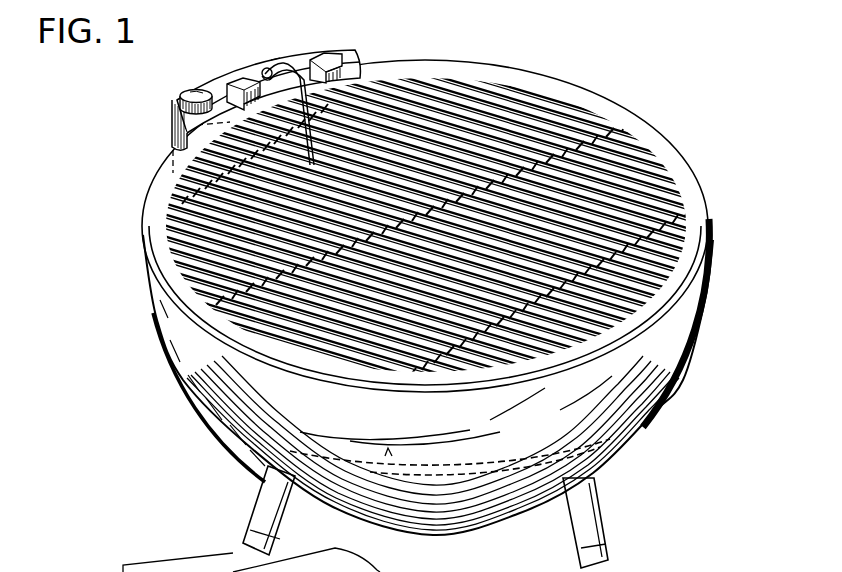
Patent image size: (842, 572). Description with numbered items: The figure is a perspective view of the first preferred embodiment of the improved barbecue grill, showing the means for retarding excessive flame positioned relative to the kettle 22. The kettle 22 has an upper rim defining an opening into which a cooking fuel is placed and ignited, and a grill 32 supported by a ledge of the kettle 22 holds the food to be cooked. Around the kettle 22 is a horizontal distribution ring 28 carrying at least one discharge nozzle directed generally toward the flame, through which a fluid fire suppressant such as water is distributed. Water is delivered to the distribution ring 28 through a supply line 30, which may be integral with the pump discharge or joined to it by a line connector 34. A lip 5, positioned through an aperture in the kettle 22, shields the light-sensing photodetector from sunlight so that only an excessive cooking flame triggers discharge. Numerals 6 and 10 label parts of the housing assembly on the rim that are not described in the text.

The lip 5 is at (253, 77).
The motor housing block 6 is at (330, 52).
The control knob 10 is at (182, 88).
The kettle 22 is at (683, 393).
The horizontal distribution ring 28 is at (503, 457).
The supply line 30 is at (290, 62).
The grill 32 is at (617, 133).
The line connector 34 is at (268, 67).